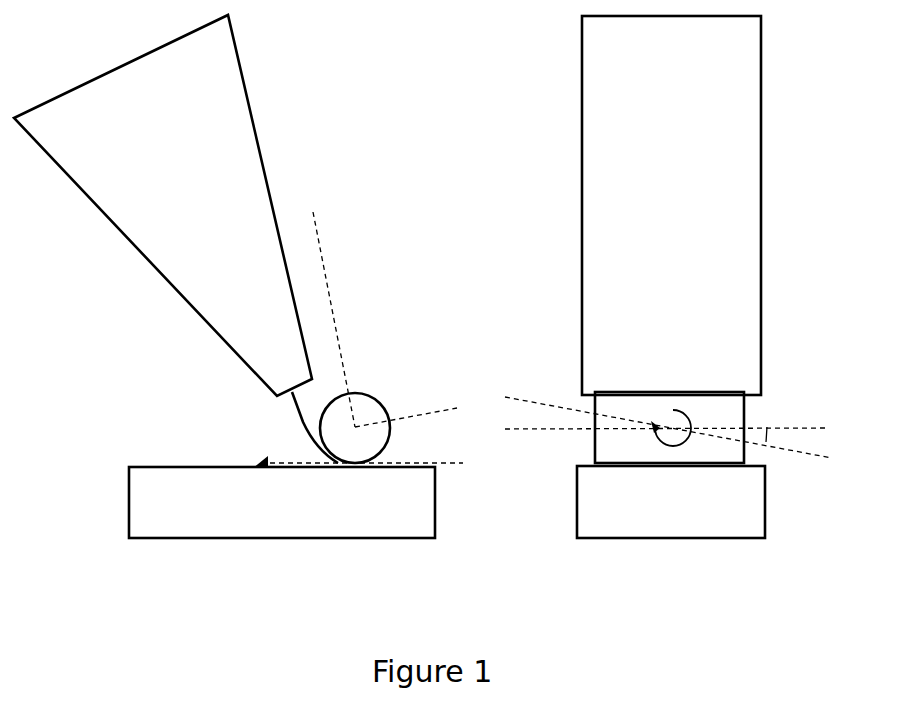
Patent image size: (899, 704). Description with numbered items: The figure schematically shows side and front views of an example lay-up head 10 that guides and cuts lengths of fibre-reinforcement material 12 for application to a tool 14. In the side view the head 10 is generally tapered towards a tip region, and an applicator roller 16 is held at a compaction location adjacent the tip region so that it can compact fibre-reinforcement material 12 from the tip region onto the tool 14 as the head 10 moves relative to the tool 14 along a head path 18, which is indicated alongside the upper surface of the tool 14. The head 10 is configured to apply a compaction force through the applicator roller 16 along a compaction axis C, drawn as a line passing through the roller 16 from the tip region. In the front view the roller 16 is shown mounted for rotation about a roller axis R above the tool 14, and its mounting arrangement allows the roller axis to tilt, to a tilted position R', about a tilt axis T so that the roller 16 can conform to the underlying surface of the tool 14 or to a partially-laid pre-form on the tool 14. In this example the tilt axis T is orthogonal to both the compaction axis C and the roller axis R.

The lay-up head 10 is at (232, 102).
The fibre-reinforcement material 12 is at (302, 413).
The tool 14 is at (182, 508).
The applicator roller 16 is at (371, 404).
The head path 18 is at (285, 461).
The compaction axis C is at (322, 250).
The tilt axis T is at (423, 417).
The roller axis R is at (677, 405).
The tilted roller axis R' is at (698, 427).